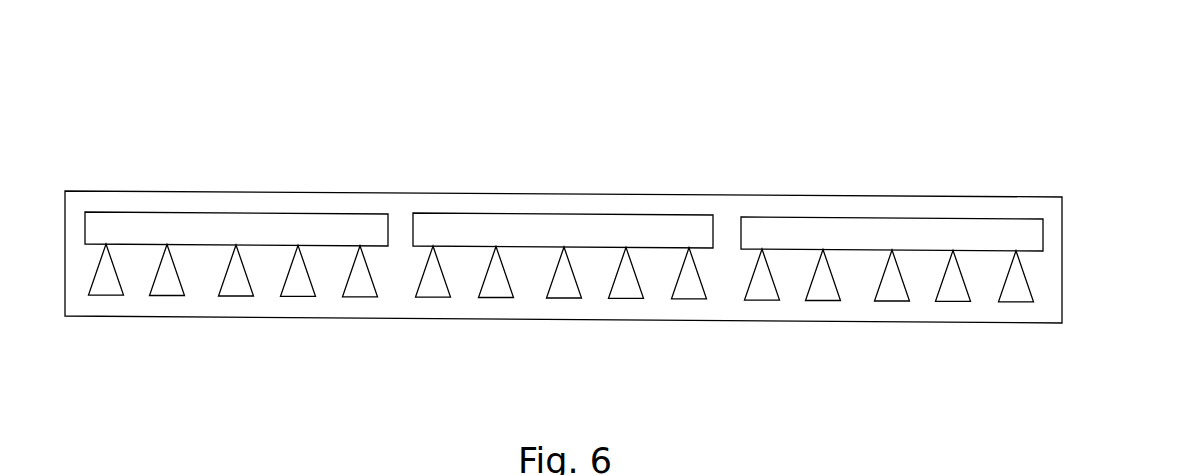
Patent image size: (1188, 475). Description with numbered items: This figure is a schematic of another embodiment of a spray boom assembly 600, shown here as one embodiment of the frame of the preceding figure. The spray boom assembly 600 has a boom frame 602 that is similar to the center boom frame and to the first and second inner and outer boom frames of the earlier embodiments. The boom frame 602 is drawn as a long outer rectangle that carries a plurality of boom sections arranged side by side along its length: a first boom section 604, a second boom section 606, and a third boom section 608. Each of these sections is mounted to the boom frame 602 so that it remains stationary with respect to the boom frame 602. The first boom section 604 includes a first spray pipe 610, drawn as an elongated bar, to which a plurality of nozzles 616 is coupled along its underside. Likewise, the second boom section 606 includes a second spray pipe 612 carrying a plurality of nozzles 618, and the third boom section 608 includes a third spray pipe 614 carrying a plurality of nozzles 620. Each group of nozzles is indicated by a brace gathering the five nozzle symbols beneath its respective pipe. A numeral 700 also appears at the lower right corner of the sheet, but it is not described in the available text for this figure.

The spray boom assembly 600 is at (1096, 121).
The boom frame 602 is at (1062, 258).
The first boom section 604 is at (225, 182).
The second boom section 606 is at (554, 184).
The third boom section 608 is at (881, 185).
The first spray pipe 610 is at (329, 225).
The second spray pipe 612 is at (657, 228).
The third spray pipe 614 is at (985, 230).
The plurality of nozzles 616 is at (363, 295).
The plurality of nozzles 618 is at (690, 297).
The plurality of nozzles 620 is at (1017, 301).
The light emitting device (FIG. 7) 700 is at (1165, 461).